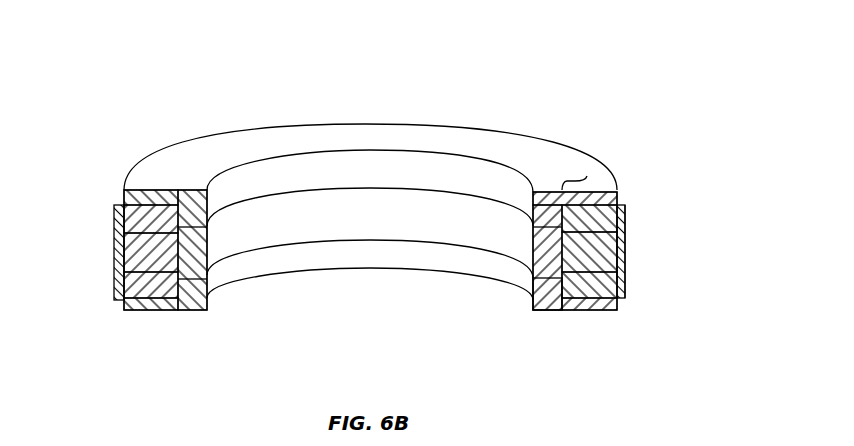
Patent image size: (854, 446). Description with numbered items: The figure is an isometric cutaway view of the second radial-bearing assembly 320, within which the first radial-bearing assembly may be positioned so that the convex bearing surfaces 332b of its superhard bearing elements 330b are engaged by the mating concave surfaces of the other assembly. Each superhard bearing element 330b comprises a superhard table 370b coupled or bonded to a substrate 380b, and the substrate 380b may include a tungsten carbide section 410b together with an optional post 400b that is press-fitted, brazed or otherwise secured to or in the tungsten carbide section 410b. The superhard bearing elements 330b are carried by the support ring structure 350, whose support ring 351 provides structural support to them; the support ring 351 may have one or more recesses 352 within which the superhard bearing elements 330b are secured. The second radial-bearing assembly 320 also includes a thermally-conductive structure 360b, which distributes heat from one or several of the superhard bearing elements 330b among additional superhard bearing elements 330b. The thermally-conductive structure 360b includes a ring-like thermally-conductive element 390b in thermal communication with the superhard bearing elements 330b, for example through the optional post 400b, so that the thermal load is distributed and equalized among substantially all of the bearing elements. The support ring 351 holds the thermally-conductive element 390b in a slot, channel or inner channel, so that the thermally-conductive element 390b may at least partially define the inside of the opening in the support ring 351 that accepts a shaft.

The second radial-bearing assembly 320 is at (621, 70).
The superhard bearing elements 330b is at (569, 204).
The convex bearing surfaces 332b is at (627, 267).
The support ring structure 350 is at (183, 230).
The support ring 351 is at (207, 292).
The recesses 352 is at (160, 198).
The thermally-conductive structure 360b is at (554, 208).
The superhard table 370b is at (623, 254).
The substrate 380b is at (587, 176).
The thermally-conductive element 390b is at (545, 256).
The optional post 400b is at (550, 279).
The tungsten carbide section 410b is at (597, 283).